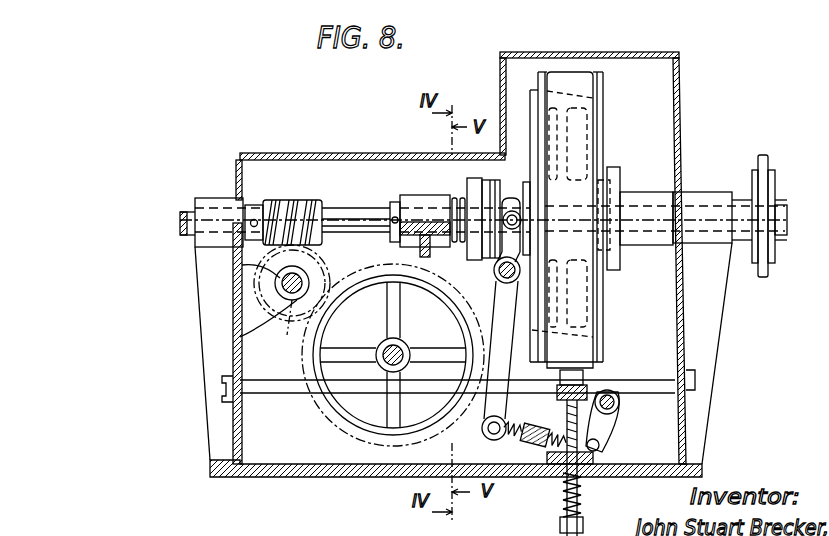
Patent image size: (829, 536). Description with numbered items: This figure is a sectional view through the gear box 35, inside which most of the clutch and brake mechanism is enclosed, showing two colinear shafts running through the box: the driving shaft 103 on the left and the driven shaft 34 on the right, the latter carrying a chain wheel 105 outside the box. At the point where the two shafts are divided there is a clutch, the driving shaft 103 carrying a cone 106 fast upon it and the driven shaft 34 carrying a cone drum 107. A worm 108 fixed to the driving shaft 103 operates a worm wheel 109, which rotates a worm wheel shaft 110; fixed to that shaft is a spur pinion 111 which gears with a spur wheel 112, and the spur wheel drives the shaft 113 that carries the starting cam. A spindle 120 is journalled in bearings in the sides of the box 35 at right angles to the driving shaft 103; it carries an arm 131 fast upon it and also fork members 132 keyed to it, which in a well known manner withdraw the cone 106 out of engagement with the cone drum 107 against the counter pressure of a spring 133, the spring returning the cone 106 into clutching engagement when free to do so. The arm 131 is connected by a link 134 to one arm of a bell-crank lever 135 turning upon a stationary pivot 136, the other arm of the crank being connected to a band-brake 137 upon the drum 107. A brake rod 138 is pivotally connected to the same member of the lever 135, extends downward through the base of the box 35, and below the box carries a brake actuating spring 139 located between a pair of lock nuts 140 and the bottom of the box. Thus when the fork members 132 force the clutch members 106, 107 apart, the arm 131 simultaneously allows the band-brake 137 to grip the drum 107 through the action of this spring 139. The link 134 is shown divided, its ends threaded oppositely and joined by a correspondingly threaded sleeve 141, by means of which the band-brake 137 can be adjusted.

The driven shaft 34 is at (779, 218).
The gear box 35 is at (678, 97).
The driving shaft 103 is at (185, 216).
The chain wheel 105 is at (766, 176).
The cone 106 is at (534, 108).
The cone drum 107 is at (542, 70).
The worm 108 is at (310, 190).
The worm wheel 109 is at (257, 265).
The worm wheel shaft 110 is at (285, 316).
The spur pinion 111 is at (313, 261).
The spur wheel 112 is at (413, 265).
The shaft 113 is at (387, 341).
The spindle 120 is at (496, 266).
The arm 131 is at (503, 350).
The fork members 132 is at (517, 195).
The spring 133 is at (424, 242).
The link 134 is at (515, 444).
The bell-crank lever 135 is at (600, 428).
The stationary pivot 136 is at (619, 401).
The band-brake 137 is at (563, 82).
The brake rod 138 is at (583, 503).
The brake actuating spring 139 is at (579, 475).
The lock nuts 140 is at (585, 523).
The threaded sleeve 141 is at (527, 424).